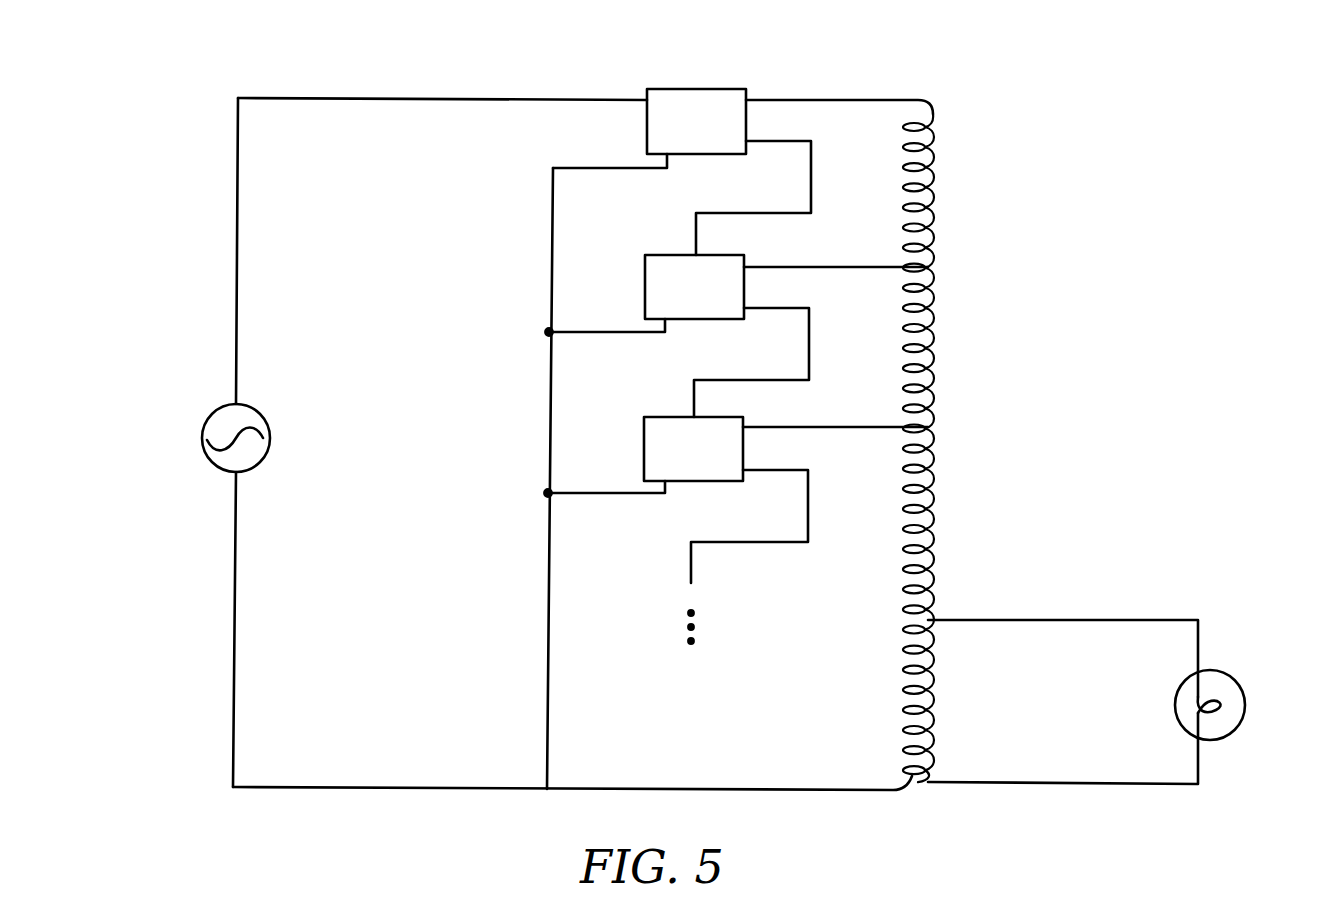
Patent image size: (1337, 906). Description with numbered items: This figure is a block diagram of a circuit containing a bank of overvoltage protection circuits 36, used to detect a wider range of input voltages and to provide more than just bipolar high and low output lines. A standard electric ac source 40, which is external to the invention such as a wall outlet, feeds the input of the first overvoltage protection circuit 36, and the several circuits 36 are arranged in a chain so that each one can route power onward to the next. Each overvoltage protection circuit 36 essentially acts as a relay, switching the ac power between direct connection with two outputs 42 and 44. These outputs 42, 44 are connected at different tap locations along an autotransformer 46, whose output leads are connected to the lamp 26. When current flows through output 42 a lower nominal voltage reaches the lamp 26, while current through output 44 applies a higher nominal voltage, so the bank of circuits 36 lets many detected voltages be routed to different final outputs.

The lamp 26 is at (1228, 672).
The overvoltage protection circuit 36 is at (704, 89).
The ac source 40 is at (220, 410).
The output 42 is at (800, 100).
The output 44 is at (813, 163).
The autotransformer 46 is at (932, 258).